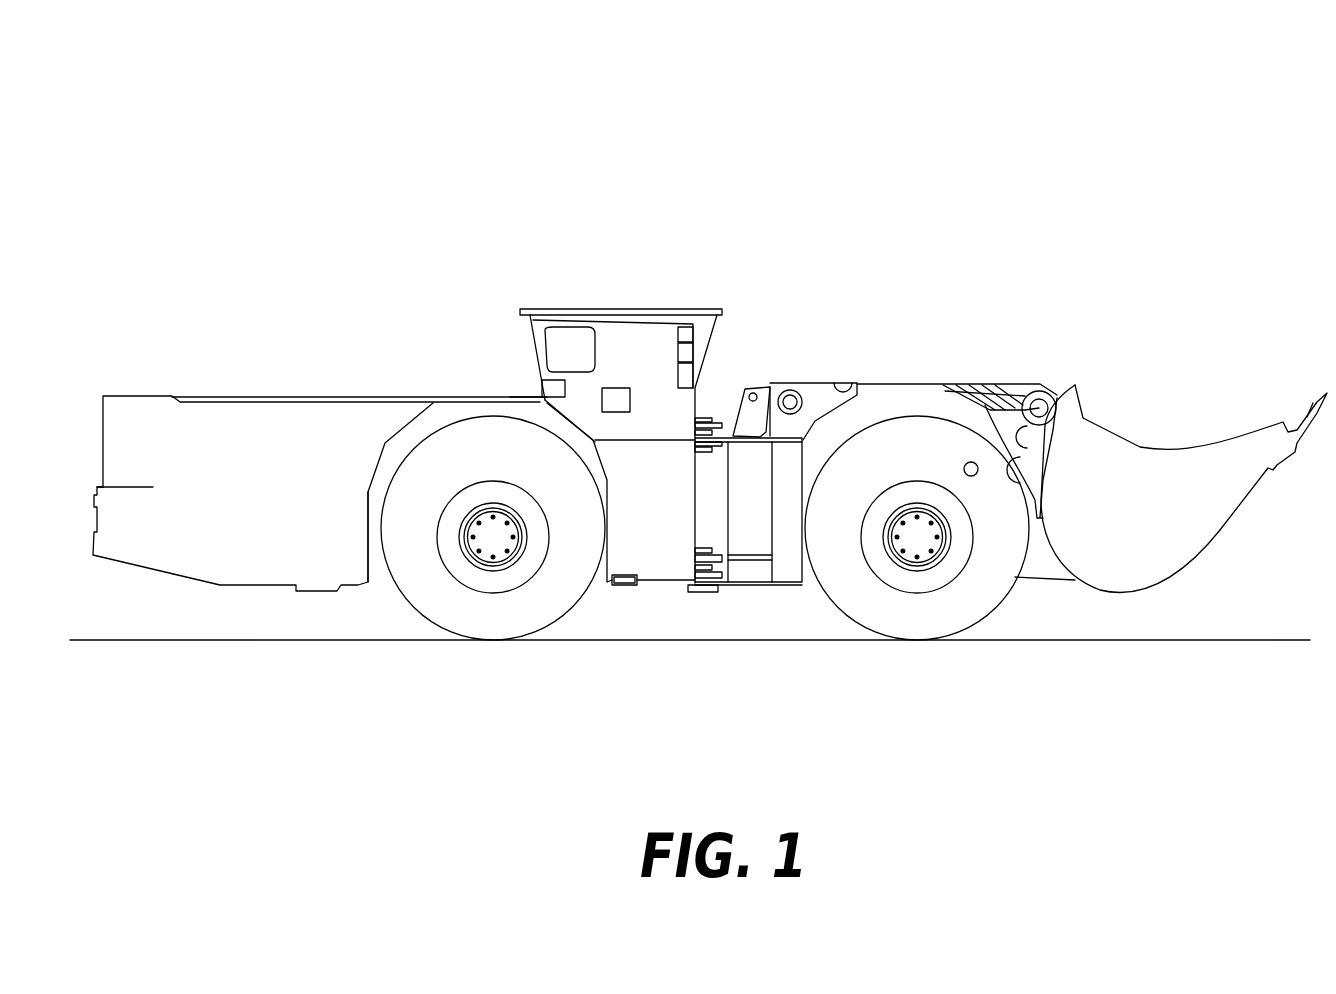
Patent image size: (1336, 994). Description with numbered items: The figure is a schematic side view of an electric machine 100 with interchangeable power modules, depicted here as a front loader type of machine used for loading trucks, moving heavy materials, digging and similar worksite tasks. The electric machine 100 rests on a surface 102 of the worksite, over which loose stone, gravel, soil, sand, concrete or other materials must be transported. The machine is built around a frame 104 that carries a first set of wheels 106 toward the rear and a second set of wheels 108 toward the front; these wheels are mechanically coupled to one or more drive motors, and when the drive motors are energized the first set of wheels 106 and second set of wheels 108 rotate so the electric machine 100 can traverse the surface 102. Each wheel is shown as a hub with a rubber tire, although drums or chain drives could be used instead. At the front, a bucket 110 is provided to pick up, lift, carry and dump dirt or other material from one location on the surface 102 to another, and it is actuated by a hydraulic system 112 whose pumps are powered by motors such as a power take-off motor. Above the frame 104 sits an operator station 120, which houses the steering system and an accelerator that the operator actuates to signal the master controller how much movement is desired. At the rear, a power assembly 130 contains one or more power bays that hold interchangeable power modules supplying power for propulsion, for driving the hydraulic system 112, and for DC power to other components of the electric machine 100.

The electric machine 100 is at (1135, 145).
The surface 102 is at (1223, 642).
The frame 104 is at (650, 573).
The first set of wheels 106 is at (472, 603).
The second set of wheels 108 is at (912, 595).
The bucket 110 is at (1123, 580).
The hydraulic system 112 is at (1002, 397).
The operator station 120 is at (616, 285).
The power assembly 130 is at (245, 360).